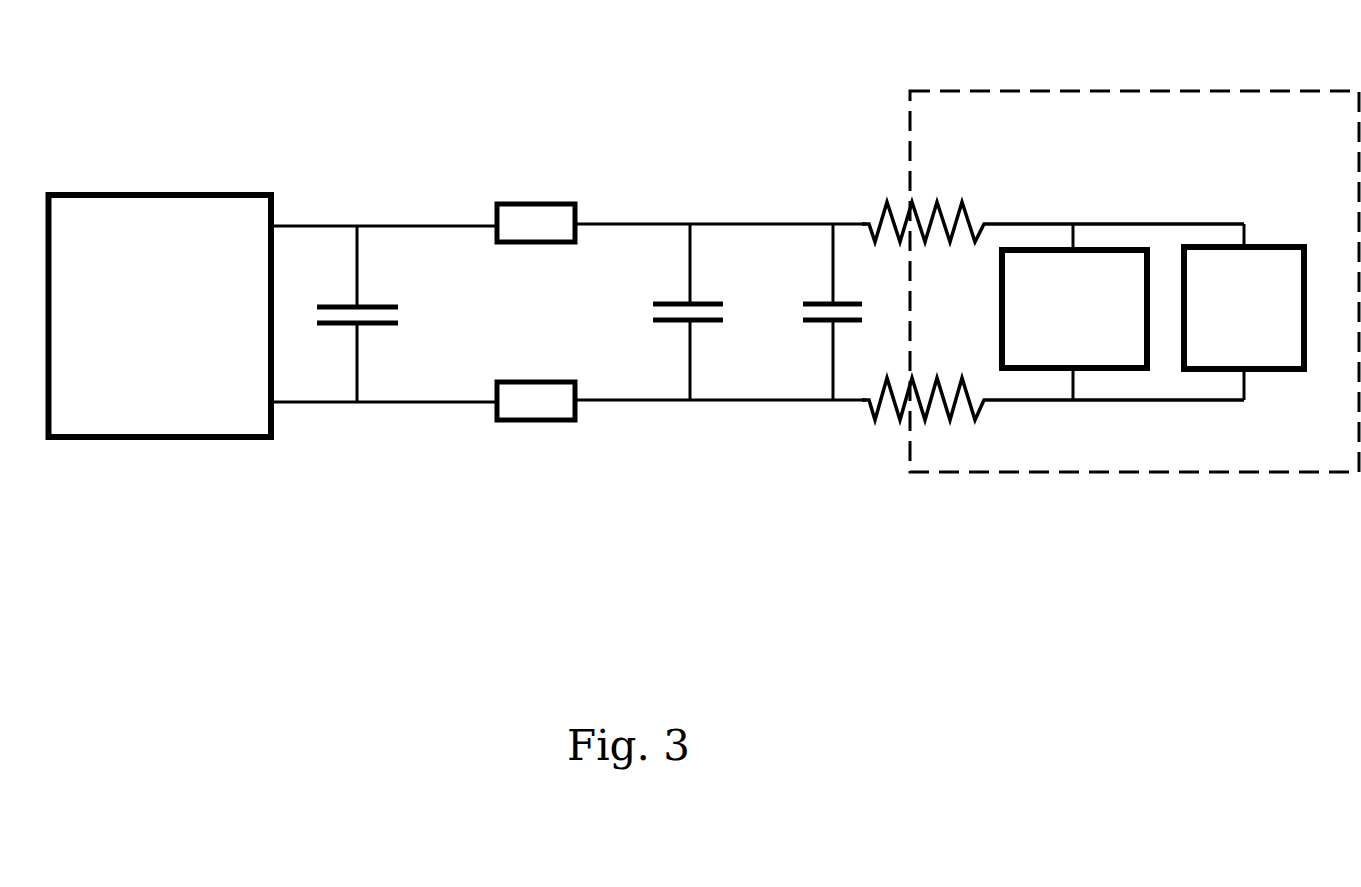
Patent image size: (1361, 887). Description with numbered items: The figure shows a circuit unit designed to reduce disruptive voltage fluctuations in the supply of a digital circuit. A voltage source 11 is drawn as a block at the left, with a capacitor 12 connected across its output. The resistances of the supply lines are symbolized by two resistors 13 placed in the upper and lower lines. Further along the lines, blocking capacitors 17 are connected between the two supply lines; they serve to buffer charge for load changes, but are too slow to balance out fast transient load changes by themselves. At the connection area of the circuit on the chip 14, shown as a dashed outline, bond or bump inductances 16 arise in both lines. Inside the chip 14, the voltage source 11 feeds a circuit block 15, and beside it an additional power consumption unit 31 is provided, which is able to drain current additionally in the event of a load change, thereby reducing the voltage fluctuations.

The voltage source 11 is at (188, 194).
The capacitor 12 is at (373, 306).
The resistors 13 is at (535, 203).
The chip 14 is at (1158, 108).
The circuit block 15 is at (1108, 262).
The bond or bump inductances 16 is at (885, 201).
The blocking capacitors 17 is at (665, 325).
The power consumption unit 31 is at (1257, 262).